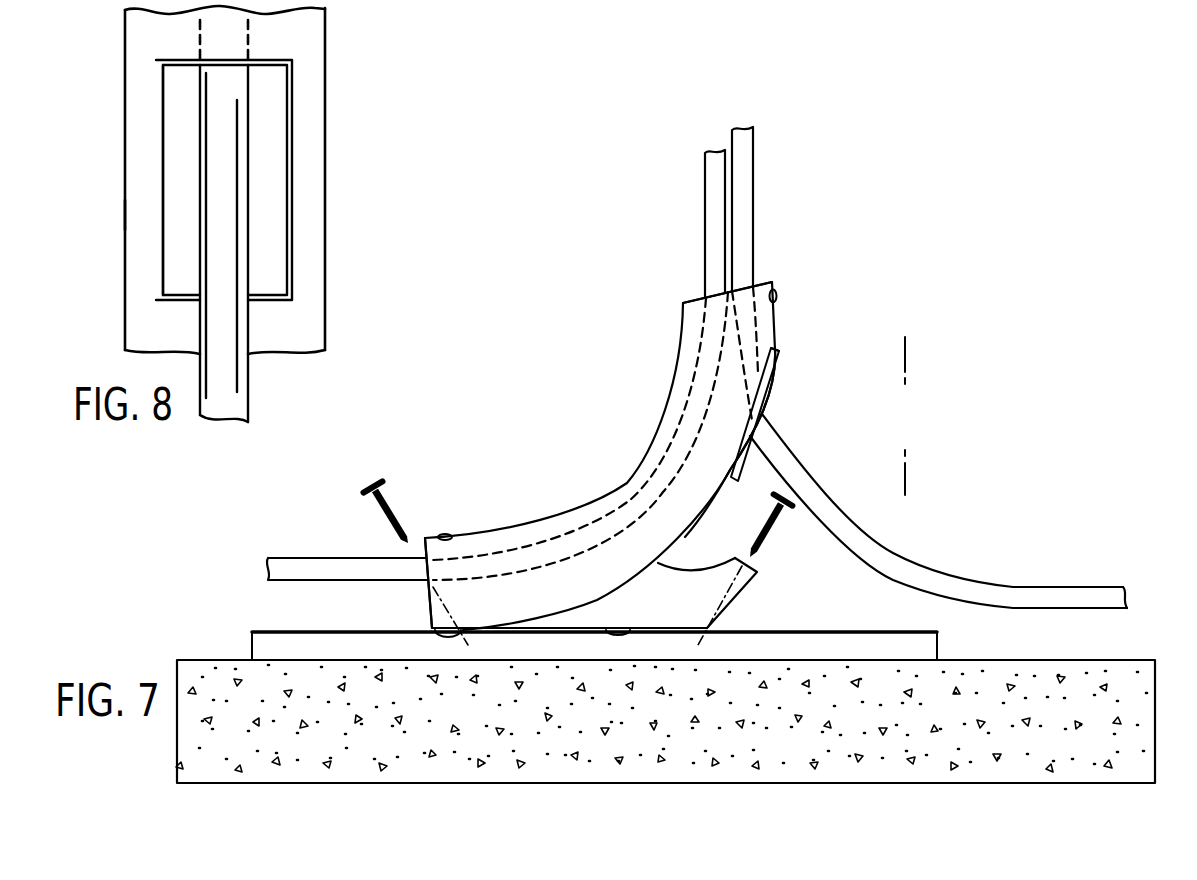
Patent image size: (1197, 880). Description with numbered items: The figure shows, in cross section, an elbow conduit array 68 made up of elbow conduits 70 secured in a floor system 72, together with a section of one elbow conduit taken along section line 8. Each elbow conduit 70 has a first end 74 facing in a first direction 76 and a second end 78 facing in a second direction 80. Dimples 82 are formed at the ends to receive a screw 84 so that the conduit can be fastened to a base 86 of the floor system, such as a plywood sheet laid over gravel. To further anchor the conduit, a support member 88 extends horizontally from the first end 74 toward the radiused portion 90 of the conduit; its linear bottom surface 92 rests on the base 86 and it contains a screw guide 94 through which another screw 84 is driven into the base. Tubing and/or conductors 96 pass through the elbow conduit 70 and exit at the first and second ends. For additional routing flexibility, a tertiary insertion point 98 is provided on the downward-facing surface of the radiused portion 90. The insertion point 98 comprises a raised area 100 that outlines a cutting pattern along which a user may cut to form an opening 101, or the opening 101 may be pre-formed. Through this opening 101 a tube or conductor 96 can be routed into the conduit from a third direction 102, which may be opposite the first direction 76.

In FIG. 7, the elbow conduit array 68 is at (627, 267).
In FIG. 7, the elbow conduit 70 is at (662, 412).
In FIG. 8, the elbow conduit 70 is at (328, 71).
In FIG. 7, the floor system 72 is at (214, 649).
In FIG. 7, the first end 74 is at (422, 547).
In FIG. 7, the first direction 76 is at (234, 482).
In FIG. 7, the second end 78 is at (772, 288).
In FIG. 7, the second direction 80 is at (905, 264).
In FIG. 7, the dimple 82 is at (777, 295).
In FIG. 7, the screw 84 is at (382, 517).
In FIG. 7, the base 86 is at (845, 632).
In FIG. 7, the support member 88 is at (680, 567).
In FIG. 7, the radiused portion 90 is at (790, 332).
In FIG. 8, the radiused portion 90 is at (113, 208).
In FIG. 7, the linear bottom surface 92 is at (630, 627).
In FIG. 7, the screw guide 94 is at (742, 602).
In FIG. 7, the tubing and/or conductors 96 is at (755, 153).
In FIG. 8, the tubing and/or conductors 96 is at (252, 368).
In FIG. 7, the tertiary insertion point 98 is at (790, 373).
In FIG. 8, the tertiary insertion point 98 is at (298, 180).
In FIG. 7, the raised area 100 is at (781, 357).
In FIG. 7, the opening 101 is at (797, 416).
In FIG. 8, the opening 101 is at (177, 138).
In FIG. 7, the third direction 102 is at (970, 513).
In FIG. 7, the section line for FIG. 8 is at (913, 347).